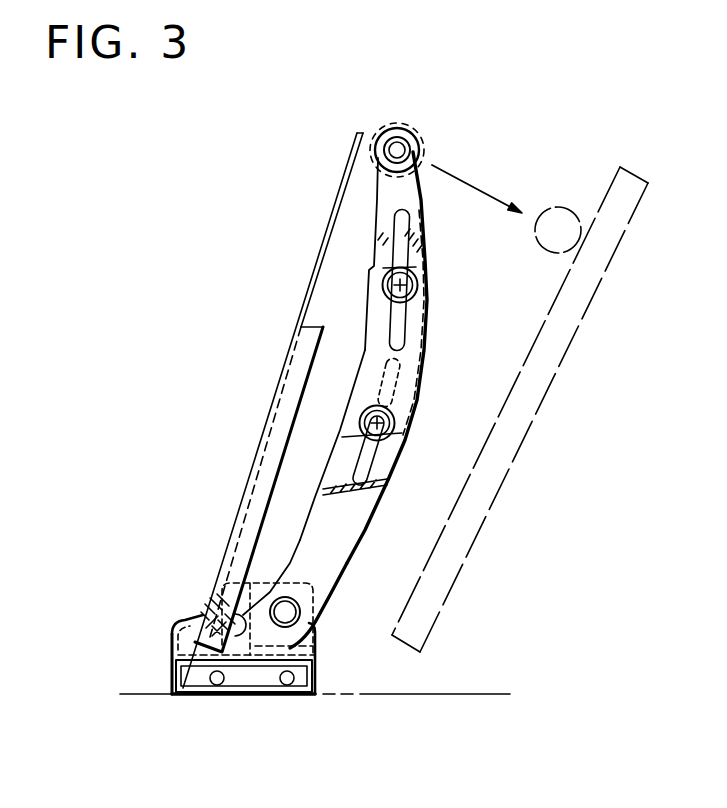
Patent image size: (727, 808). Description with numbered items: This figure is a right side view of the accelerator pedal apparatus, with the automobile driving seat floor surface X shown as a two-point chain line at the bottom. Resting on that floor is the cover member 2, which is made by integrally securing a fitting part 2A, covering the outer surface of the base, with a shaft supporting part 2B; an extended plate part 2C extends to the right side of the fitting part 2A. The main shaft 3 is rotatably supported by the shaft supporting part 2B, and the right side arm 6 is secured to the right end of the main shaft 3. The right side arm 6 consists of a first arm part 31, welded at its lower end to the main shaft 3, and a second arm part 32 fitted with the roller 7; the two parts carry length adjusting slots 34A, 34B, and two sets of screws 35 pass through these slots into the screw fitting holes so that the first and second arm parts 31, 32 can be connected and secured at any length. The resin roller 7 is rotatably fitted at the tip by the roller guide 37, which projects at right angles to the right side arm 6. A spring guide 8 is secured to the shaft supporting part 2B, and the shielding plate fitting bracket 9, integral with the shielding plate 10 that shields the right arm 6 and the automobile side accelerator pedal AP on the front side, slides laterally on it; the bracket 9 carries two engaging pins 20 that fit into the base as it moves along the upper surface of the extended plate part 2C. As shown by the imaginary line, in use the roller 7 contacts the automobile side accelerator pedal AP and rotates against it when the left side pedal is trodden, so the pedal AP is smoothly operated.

The cover member 2 is at (171, 613).
The fitting part 2A is at (188, 644).
The shaft supporting part 2B is at (198, 613).
The extended plate part 2C is at (220, 697).
The main shaft 3 is at (292, 613).
The right side arm 6 is at (430, 361).
The roller 7 is at (412, 130).
The spring guide 8 is at (236, 640).
The shielding plate fitting bracket 9 is at (320, 643).
The shielding plate 10 is at (328, 235).
The engaging pins 20 is at (287, 690).
The first arm part 31 is at (343, 560).
The second arm part 32 is at (380, 195).
The length adjusting slot 34A is at (372, 492).
The length adjusting slot 34B is at (408, 228).
The screws 35 is at (412, 279).
The roller guide 37 is at (397, 148).
The automobile side accelerator pedal AP is at (520, 445).
The automobile driving seat floor surface X is at (331, 698).